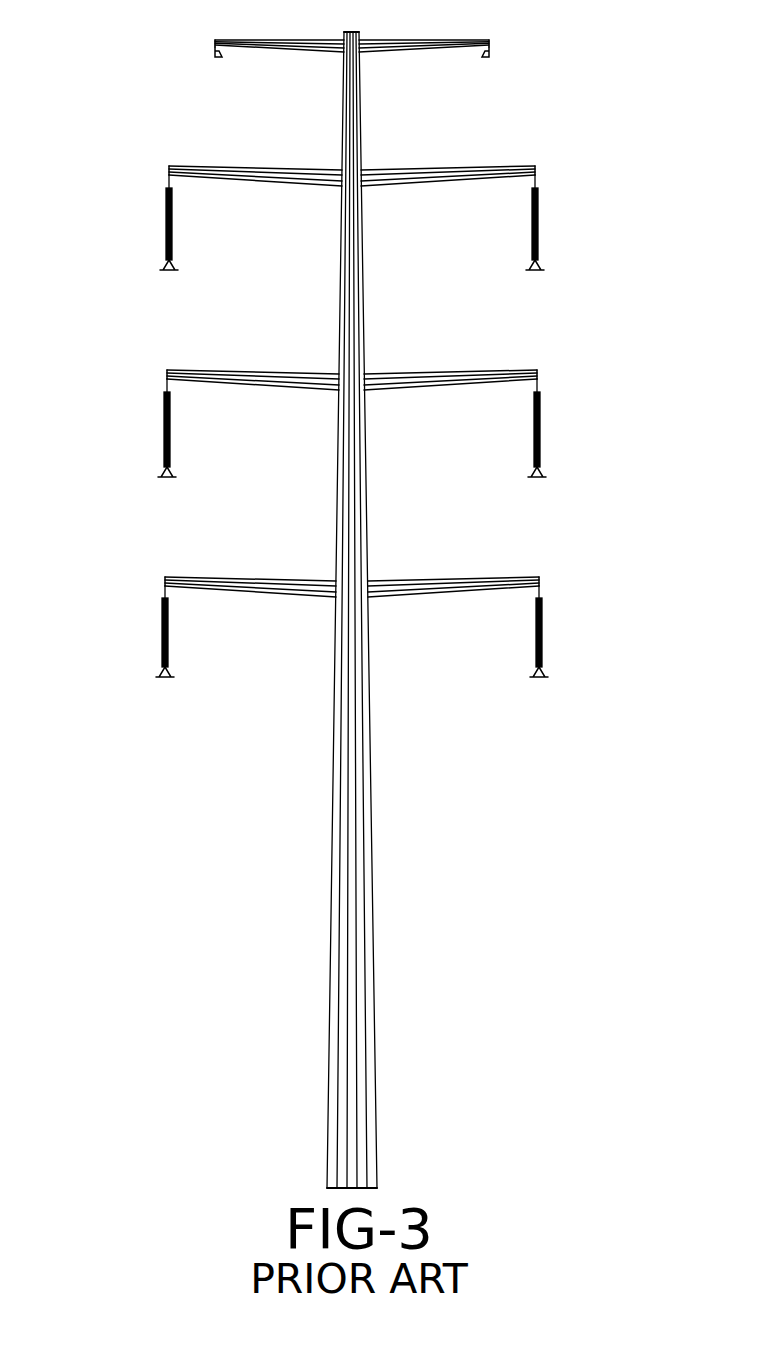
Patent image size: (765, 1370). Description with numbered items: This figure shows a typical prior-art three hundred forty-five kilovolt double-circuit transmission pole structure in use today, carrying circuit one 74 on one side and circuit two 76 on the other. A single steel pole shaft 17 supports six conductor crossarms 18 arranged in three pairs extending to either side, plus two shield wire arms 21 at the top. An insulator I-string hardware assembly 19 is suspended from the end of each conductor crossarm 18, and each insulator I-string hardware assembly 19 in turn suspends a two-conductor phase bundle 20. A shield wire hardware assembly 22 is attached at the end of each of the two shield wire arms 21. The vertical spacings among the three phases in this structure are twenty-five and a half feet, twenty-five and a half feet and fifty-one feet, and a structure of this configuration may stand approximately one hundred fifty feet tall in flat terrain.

The steel pole shaft 17 is at (352, 905).
The conductor crossarm 18 is at (267, 166).
The insulator I-string hardware assembly 19 is at (167, 232).
The two-conductor phase bundle 20 is at (164, 266).
The shield wire arm 21 is at (307, 43).
The shield wire hardware assembly 22 is at (217, 55).
The circuit one 74 is at (115, 843).
The circuit two 76 is at (590, 843).